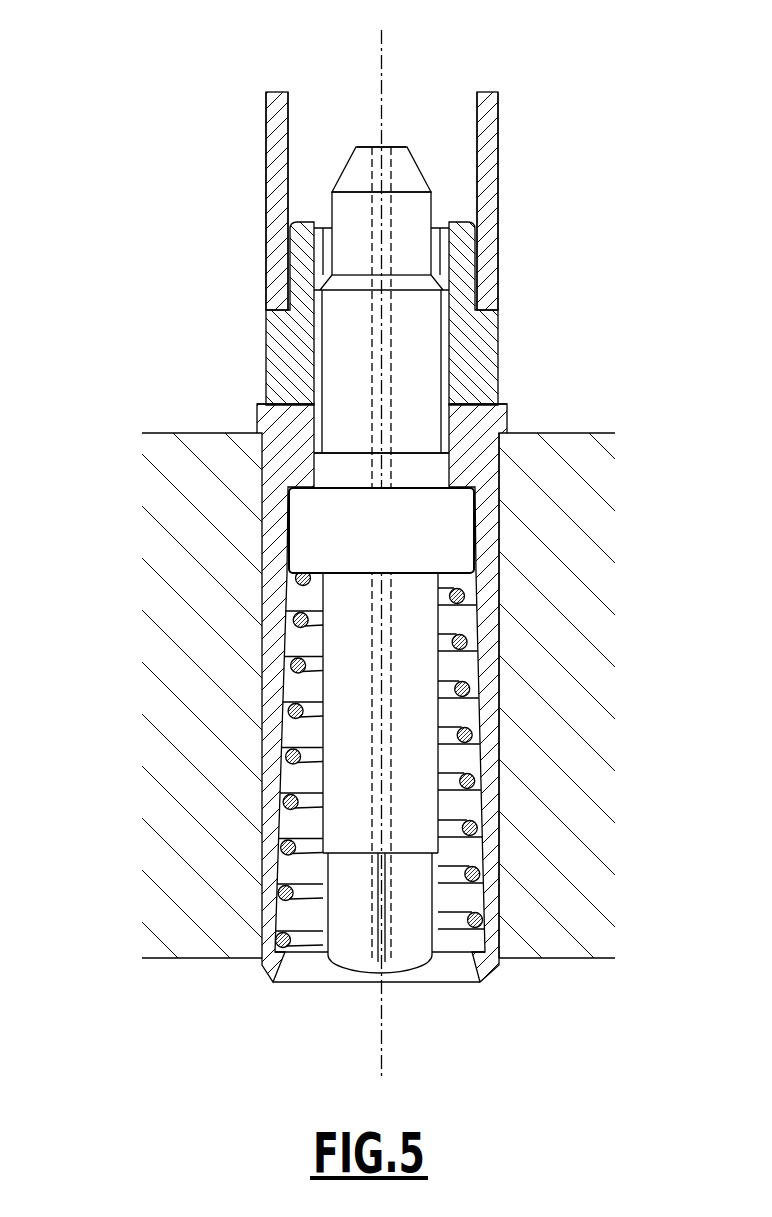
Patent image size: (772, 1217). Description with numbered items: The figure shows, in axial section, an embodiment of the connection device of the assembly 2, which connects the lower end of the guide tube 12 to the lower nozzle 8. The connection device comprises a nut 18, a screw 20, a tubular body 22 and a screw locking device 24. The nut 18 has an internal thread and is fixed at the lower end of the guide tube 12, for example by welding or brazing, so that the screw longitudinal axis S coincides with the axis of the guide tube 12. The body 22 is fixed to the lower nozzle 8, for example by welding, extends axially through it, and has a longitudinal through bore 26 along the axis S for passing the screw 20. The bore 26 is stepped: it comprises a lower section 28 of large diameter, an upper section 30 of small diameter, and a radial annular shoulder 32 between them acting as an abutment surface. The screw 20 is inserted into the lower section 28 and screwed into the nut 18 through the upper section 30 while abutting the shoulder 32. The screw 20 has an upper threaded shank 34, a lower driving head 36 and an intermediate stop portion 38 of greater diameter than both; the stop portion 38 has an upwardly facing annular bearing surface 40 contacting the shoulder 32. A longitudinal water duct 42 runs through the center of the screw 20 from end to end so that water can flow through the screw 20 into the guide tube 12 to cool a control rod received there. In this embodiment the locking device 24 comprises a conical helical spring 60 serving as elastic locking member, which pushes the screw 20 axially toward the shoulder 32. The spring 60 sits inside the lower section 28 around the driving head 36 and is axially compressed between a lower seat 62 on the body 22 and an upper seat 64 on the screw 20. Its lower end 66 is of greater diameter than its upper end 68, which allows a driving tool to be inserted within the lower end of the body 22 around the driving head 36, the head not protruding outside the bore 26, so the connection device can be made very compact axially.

The screw longitudinal axis S is at (393, 554).
The assembly 2 is at (628, 240).
The lower nozzle 8 is at (630, 408).
The guide tube 12 is at (488, 148).
The nut 18 is at (476, 355).
The screw 20 is at (412, 393).
The tubular body 22 is at (507, 468).
The screw locking device 24 is at (273, 783).
The longitudinal through bore 26 is at (313, 972).
The lower section 28 is at (286, 828).
The upper section 30 is at (257, 416).
The radial annular shoulder 32 is at (468, 503).
The upper threaded shank 34 is at (413, 241).
The lower driving head 36 is at (426, 715).
The intermediate stop portion 38 is at (452, 543).
The annular bearing surface 40 is at (325, 447).
The longitudinal water duct 42 is at (400, 160).
The helical spring 60 is at (500, 829).
The lower seat 62 is at (478, 950).
The upper seat 64 is at (470, 594).
The lower end 66 is at (280, 945).
The upper end 68 is at (300, 582).